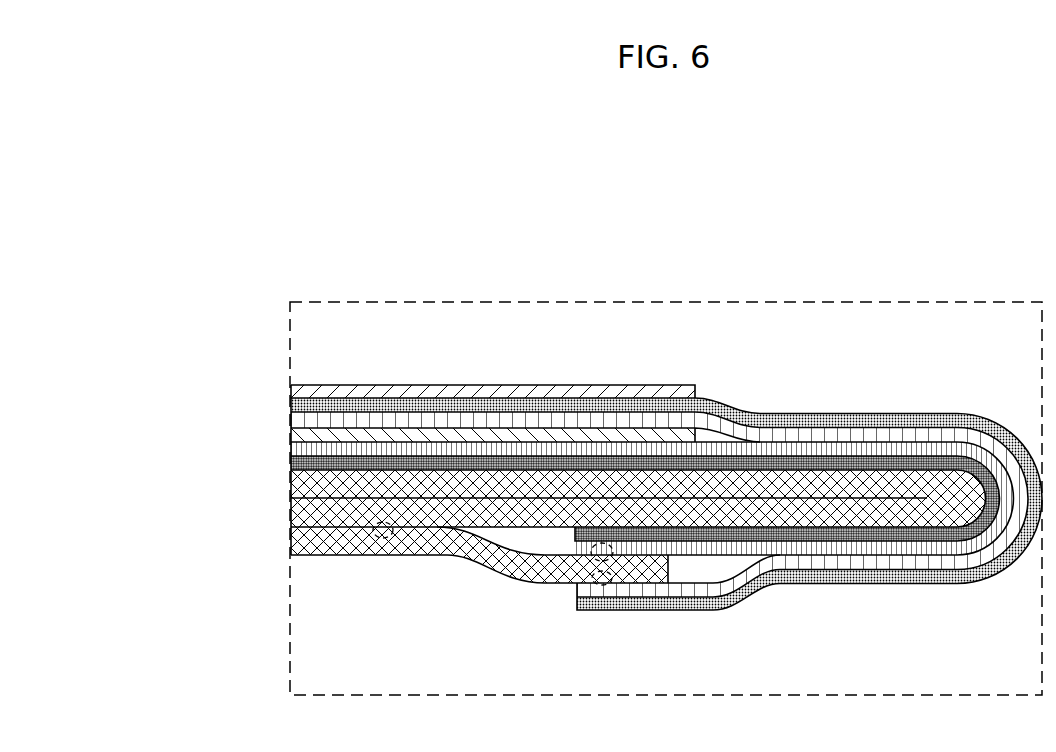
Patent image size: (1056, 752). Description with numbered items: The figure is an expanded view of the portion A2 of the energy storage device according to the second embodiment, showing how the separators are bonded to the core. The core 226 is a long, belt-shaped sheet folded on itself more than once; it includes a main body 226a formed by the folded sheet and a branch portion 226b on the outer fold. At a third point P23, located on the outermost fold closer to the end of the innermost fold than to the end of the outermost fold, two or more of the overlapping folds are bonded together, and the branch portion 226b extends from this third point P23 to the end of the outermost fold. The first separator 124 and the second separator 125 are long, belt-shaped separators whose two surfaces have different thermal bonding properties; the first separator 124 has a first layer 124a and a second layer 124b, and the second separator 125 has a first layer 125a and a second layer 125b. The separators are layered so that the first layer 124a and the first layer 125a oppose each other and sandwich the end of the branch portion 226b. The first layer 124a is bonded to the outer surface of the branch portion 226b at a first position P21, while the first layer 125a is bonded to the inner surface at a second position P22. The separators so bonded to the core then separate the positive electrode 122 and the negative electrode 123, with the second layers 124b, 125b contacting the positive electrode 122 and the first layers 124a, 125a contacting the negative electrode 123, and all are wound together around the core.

The positive electrode 122 is at (291, 390).
The negative electrode 123 is at (291, 434).
The first separator 124 is at (666, 519).
The first layer of the first separator 124a is at (577, 590).
The second layer of the first separator 124b is at (577, 604).
The second separator 125 is at (565, 498).
The first layer of the second separator 125a is at (291, 450).
The second layer of the second separator 125b is at (291, 462).
The core 226 is at (638, 557).
The main body 226a is at (822, 522).
The branch portion 226b is at (495, 566).
The first position P21 is at (603, 612).
The second position P22 is at (653, 612).
The third point P23 is at (382, 548).
The portion A2 is at (645, 302).